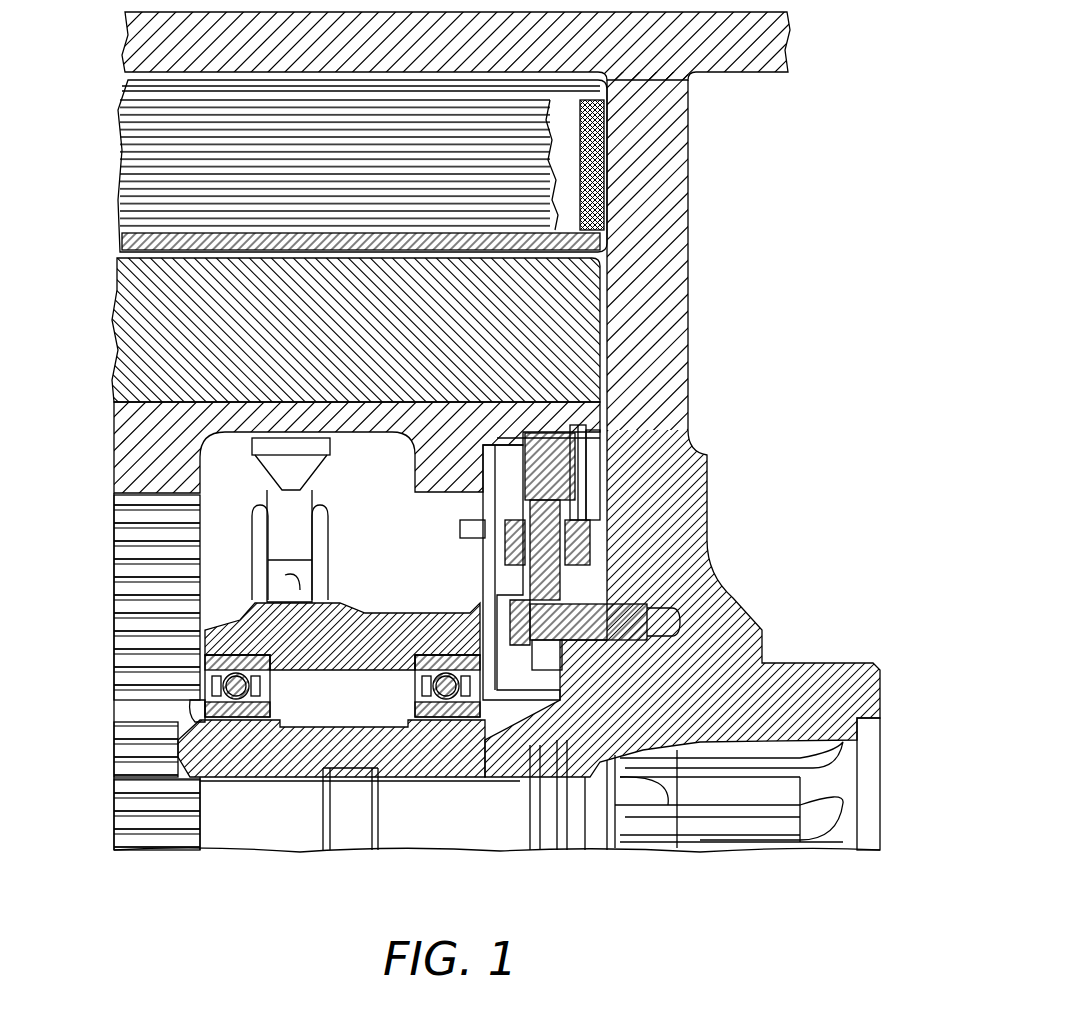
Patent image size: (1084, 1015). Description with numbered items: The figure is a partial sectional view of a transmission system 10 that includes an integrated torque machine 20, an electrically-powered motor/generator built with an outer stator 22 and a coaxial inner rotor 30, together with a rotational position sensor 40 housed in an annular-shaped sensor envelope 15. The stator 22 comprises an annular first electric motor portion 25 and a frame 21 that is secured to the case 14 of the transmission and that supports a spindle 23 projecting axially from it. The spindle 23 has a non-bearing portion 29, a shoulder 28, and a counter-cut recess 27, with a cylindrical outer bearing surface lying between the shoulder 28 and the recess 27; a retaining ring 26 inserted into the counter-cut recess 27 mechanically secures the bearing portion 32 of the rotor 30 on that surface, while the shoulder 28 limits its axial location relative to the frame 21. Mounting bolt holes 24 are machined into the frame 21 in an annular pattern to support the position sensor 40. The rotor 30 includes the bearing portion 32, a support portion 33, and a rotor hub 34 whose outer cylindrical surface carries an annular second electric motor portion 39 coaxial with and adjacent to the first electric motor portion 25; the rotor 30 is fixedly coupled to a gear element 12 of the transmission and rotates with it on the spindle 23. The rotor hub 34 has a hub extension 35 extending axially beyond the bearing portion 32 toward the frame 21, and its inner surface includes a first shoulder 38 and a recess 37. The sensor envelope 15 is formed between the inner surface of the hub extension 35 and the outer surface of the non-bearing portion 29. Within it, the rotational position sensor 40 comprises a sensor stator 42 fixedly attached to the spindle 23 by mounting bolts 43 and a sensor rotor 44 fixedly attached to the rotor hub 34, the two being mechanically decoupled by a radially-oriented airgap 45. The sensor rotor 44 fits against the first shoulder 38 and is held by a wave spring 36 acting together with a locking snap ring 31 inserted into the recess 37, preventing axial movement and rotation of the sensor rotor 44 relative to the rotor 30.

The transmission system 10 is at (115, 106).
The gear element 12 is at (109, 642).
The case 14 is at (735, 76).
The sensor envelope 15 is at (552, 660).
The torque machine 20 is at (509, 425).
The frame 21 is at (652, 283).
The stator 22 is at (688, 212).
The spindle 23 is at (276, 757).
The mounting bolt holes 24 is at (690, 638).
The first electric motor portion 25 is at (308, 177).
The retaining ring 26 is at (200, 725).
The counter-cut recess 27 is at (195, 712).
The shoulder 28 is at (498, 692).
The non-bearing portion 29 is at (520, 722).
The rotor 30 is at (280, 428).
The locking snap ring 31 is at (572, 450).
The bearing portion 32 is at (314, 652).
The support portion 33 is at (274, 549).
The rotor hub 34 is at (434, 452).
The hub extension 35 is at (555, 472).
The wave spring 36 is at (508, 505).
The recess 37 is at (585, 432).
The first shoulder 38 is at (540, 410).
The second electric motor portion 39 is at (314, 337).
The rotational position sensor 40 is at (545, 480).
The sensor stator 42 is at (548, 548).
The mounting bolts 43 is at (612, 620).
The sensor rotor 44 is at (470, 493).
The airgap 45 is at (552, 518).